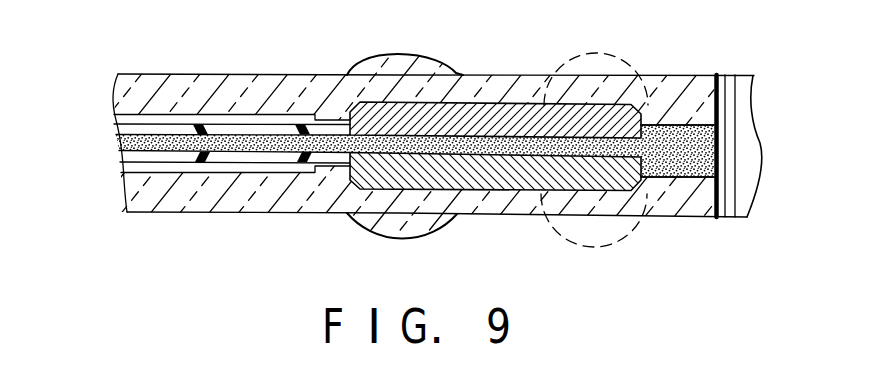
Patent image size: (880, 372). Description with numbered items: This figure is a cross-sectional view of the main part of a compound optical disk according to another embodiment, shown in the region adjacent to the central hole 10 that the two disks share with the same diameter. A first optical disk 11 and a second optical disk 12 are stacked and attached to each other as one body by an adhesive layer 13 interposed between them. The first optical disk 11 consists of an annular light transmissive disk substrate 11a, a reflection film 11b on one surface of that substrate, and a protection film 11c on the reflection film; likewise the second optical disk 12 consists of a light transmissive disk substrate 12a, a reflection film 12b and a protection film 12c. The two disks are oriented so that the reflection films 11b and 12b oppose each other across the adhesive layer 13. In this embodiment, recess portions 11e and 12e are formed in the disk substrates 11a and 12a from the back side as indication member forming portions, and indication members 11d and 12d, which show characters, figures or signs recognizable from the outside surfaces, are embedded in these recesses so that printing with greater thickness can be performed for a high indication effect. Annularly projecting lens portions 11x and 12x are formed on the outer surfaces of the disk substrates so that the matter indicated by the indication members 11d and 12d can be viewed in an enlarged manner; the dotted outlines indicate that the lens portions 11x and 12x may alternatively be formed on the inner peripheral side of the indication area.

The central hole 10 is at (735, 135).
The first optical disk 11 is at (102, 73).
The light transmissive disk substrate 11a is at (140, 82).
The reflection film 11b is at (213, 120).
The protection film 11c is at (262, 128).
The indication member 11d is at (478, 110).
The recess portion 11e is at (580, 105).
The lens portion 11x is at (400, 54).
The second optical disk 12 is at (102, 153).
The light transmissive disk substrate 12a is at (145, 210).
The reflection film 12b is at (207, 170).
The protection film 12c is at (267, 158).
The indication member 12d is at (473, 188).
The recess portion 12e is at (585, 192).
The lens portion 12x is at (402, 238).
The adhesive layer 13 is at (669, 124).